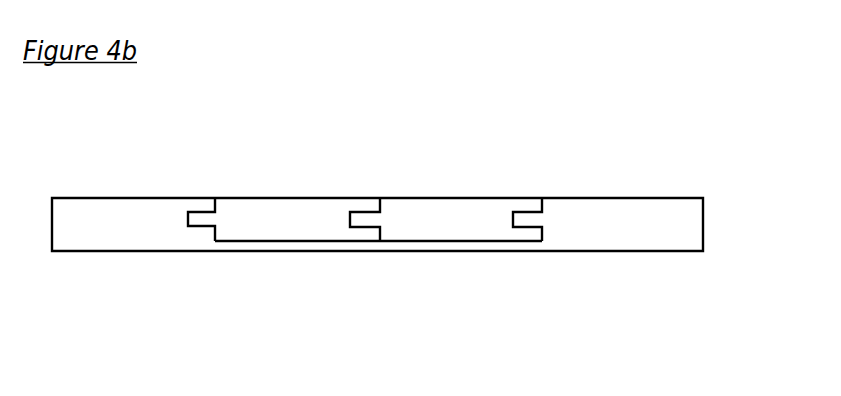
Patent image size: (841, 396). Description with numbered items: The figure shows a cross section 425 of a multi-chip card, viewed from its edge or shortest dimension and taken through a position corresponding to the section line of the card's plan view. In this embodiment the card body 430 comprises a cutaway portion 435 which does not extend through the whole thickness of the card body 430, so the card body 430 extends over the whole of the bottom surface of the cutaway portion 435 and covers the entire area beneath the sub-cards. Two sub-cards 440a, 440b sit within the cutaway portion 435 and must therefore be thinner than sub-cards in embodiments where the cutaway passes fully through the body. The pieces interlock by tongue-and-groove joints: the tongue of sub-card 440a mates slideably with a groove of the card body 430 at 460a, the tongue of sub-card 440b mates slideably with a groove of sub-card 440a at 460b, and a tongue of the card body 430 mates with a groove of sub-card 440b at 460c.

The cross section 425 is at (411, 122).
The card body 430 is at (126, 217).
The cutaway portion 435 is at (218, 242).
The sub-card 440a is at (297, 207).
The sub-card 440b is at (460, 207).
The tongue-and-groove mating location 460a is at (187, 212).
The tongue-and-groove mating location 460b is at (362, 217).
The tongue-and-groove mating location 460c is at (515, 212).